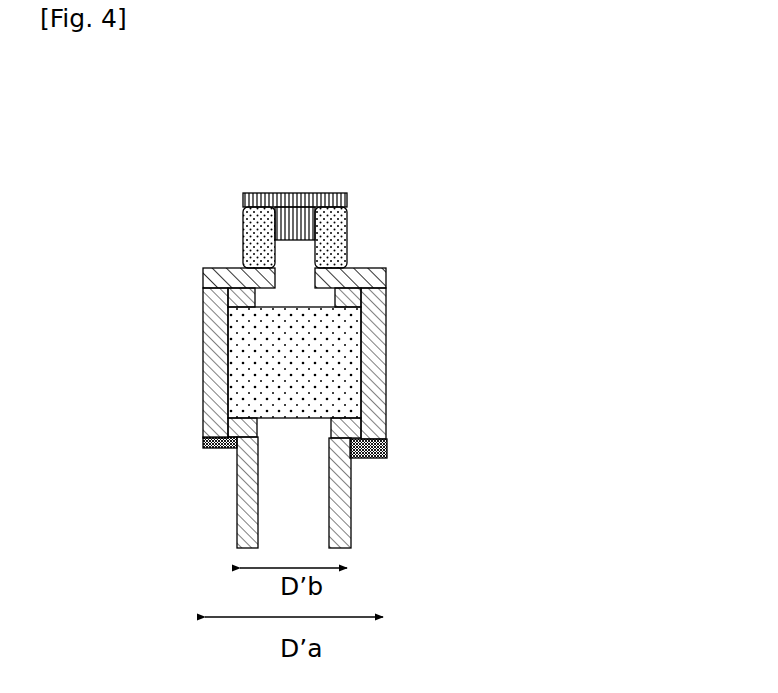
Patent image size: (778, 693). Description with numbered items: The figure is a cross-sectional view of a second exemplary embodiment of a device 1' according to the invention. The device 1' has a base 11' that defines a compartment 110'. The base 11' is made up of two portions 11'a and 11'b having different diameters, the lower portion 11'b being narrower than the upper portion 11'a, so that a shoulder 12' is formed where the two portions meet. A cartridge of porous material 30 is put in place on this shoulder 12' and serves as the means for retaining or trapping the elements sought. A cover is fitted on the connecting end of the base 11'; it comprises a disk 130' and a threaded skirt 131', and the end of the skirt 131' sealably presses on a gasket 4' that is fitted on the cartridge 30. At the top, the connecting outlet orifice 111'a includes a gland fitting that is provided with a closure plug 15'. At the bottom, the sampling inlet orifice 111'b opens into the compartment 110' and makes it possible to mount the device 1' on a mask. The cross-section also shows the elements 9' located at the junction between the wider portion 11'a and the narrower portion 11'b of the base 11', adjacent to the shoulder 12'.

The device 1' is at (344, 338).
The closure plug 15' is at (298, 179).
The connecting outlet orifice 111'a is at (343, 183).
The disk 130' is at (330, 220).
The threaded skirt 131' is at (475, 228).
The base 11' is at (345, 350).
The first portion of the base 11'a is at (223, 349).
The gasket 4' is at (210, 318).
The cartridge of porous material 30 is at (255, 382).
The shoulder 12' is at (356, 416).
The contact pads 9' is at (247, 455).
The compartment 110' is at (224, 492).
The second portion of the base 11'b is at (365, 492).
The sampling inlet orifice 111'b is at (214, 575).